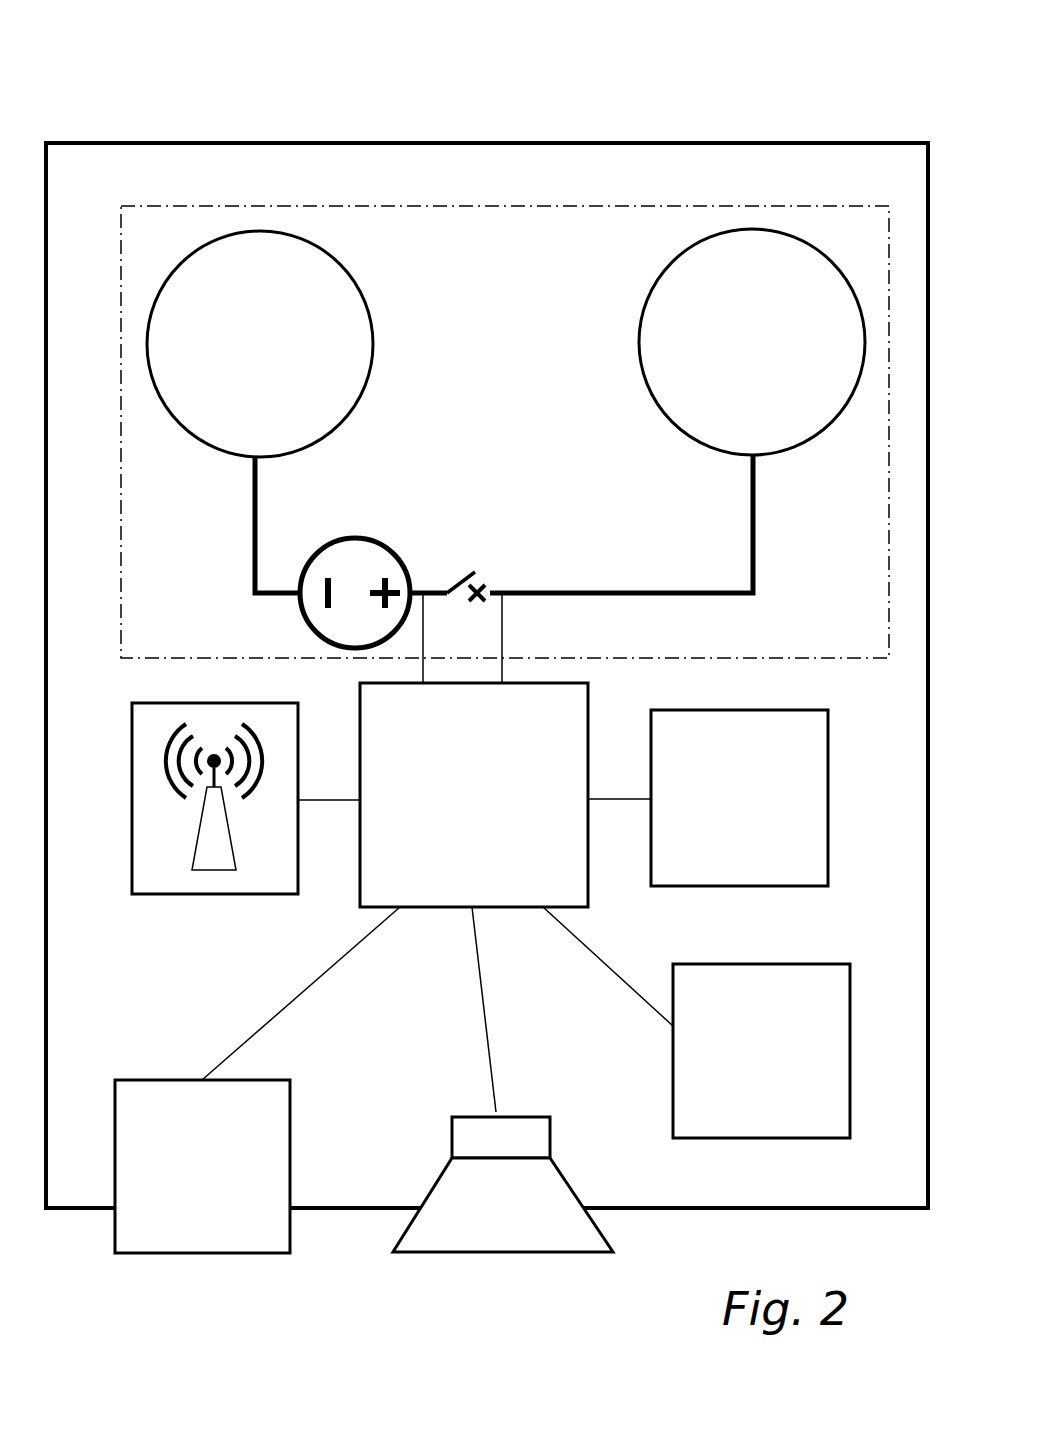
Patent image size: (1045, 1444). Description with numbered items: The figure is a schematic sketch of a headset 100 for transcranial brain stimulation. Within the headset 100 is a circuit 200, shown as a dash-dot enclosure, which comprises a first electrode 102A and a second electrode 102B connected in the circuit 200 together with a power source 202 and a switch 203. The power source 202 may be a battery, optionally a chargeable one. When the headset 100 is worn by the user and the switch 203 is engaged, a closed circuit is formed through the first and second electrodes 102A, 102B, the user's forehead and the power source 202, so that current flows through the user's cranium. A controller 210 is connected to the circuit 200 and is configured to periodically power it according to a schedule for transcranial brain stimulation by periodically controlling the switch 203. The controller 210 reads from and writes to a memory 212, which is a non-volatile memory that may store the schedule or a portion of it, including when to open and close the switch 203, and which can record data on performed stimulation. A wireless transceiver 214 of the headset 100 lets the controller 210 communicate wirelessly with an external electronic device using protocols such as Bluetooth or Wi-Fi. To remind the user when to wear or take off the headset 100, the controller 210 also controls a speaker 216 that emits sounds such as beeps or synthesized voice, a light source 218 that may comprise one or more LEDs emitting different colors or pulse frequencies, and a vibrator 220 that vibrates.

The headset 100 is at (119, 195).
The circuit 200 is at (499, 248).
The first electrode 102A is at (260, 344).
The second electrode 102B is at (752, 342).
The power source 202 is at (355, 578).
The switch 203 is at (495, 578).
The controller 210 is at (437, 897).
The memory 212 is at (739, 798).
The wireless transceiver 214 is at (182, 868).
The speaker 216 is at (490, 1218).
The light source 218 is at (202, 1166).
The vibrator 220 is at (761, 1051).